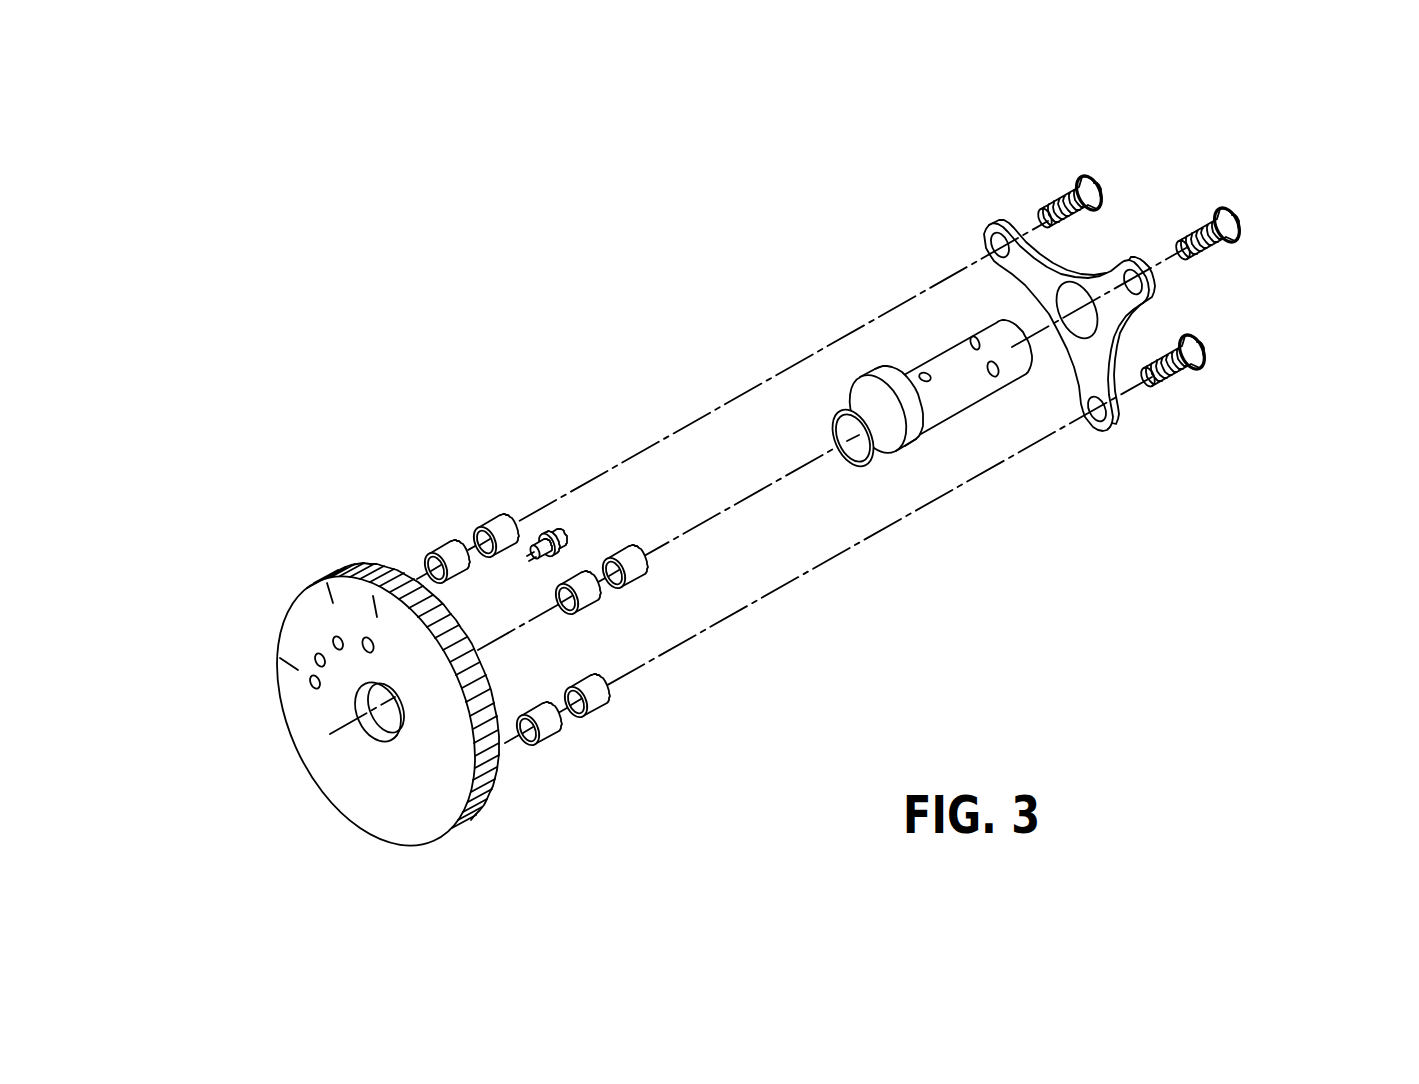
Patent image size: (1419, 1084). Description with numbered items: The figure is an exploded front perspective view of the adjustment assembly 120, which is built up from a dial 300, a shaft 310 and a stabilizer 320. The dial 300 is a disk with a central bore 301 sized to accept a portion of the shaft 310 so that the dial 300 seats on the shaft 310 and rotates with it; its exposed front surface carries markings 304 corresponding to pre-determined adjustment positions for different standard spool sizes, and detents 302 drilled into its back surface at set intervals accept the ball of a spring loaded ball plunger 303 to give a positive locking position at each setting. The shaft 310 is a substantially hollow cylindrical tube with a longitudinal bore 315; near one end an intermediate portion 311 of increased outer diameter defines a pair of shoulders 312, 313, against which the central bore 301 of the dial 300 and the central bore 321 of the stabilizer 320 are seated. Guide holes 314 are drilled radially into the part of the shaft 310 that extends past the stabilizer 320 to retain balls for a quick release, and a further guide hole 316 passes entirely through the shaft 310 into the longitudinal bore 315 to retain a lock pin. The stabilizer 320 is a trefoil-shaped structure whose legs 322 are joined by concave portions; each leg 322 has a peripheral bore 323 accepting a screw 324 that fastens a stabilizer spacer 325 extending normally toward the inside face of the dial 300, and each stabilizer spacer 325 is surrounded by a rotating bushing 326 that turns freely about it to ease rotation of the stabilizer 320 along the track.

The adjustment assembly 120 is at (603, 287).
The dial 300 is at (405, 840).
The central bore 301 is at (370, 708).
The detents 302 is at (372, 638).
The spring loaded ball plunger 303 is at (561, 532).
The markings 304 is at (303, 625).
The shaft 310 is at (913, 375).
The intermediate portion 311 is at (917, 452).
The shoulder 312 is at (850, 398).
The shoulder 313 is at (877, 372).
The guide holes 314 is at (973, 340).
The longitudinal bore 315 is at (856, 433).
The guide hole 316 is at (933, 375).
The stabilizer 320 is at (1115, 272).
The central bore 321 is at (1066, 304).
The legs 322 is at (996, 218).
The peripheral bore 323 is at (1130, 326).
The screw 324 is at (1243, 222).
The stabilizer spacer 325 is at (595, 710).
The bushing 326 is at (546, 742).